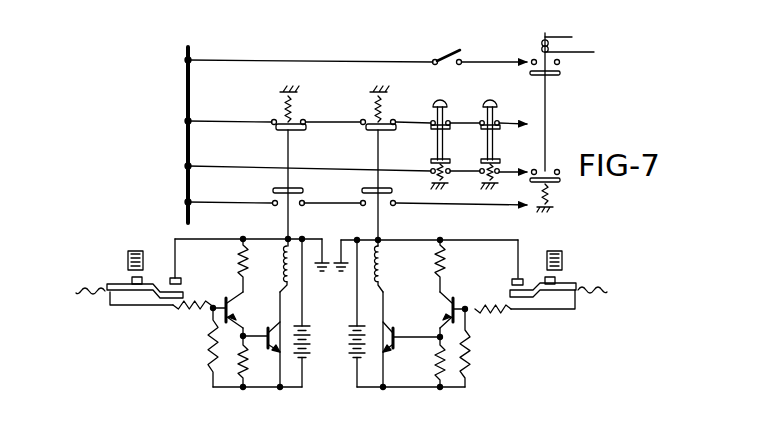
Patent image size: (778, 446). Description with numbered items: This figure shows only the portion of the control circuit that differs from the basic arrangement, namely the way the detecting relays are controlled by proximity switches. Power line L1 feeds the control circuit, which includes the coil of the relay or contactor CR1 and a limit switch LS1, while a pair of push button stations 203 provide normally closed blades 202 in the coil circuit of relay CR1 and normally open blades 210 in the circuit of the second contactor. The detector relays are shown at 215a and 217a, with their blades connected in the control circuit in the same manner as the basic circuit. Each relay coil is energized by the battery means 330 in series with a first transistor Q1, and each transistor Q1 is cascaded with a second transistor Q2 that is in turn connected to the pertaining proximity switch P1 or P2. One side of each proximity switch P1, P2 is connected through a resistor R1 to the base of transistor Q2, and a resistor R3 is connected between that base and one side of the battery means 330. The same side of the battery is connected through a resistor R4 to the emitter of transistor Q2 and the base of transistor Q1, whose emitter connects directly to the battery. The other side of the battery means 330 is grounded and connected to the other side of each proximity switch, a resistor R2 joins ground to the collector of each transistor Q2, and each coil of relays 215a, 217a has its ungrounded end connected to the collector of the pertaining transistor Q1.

The power line L1 is at (188, 122).
The limit switch LS1 is at (480, 45).
The relay or contactor CR1 is at (543, 44).
The push button stations 203 is at (485, 103).
The normally closed blades 202 is at (485, 160).
The normally open blades 210 is at (484, 178).
The detector relay 215a is at (283, 248).
The detector relay 217a is at (382, 250).
The battery means 330 is at (352, 350).
The proximity switch P1 is at (110, 276).
The proximity switch P2 is at (570, 280).
The resistor R1 is at (193, 309).
The resistor R2 is at (238, 272).
The resistor R3 is at (211, 350).
The resistor R4 is at (246, 376).
The first transistor Q1 is at (342, 339).
The second transistor Q2 is at (442, 312).